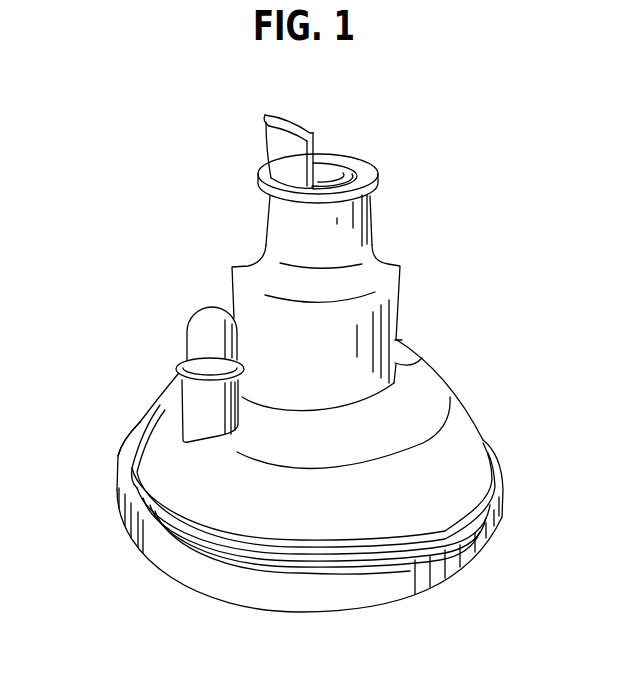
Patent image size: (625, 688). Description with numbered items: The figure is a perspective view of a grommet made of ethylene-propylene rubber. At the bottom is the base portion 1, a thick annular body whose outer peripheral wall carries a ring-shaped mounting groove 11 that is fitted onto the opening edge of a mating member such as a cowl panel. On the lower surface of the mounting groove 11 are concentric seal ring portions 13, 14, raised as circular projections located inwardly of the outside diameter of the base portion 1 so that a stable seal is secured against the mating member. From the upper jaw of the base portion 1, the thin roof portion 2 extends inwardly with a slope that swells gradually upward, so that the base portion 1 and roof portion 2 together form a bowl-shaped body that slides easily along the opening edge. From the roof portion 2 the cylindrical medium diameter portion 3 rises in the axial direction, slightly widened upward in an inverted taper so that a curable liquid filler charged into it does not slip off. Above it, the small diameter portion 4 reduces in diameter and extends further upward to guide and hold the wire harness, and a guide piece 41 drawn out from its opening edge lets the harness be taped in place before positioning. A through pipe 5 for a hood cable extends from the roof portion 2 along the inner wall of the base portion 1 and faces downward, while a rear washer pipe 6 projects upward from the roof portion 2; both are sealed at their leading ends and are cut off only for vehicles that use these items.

The base portion 1 is at (188, 578).
The roof portion 2 is at (437, 392).
The medium diameter portion 3 is at (387, 312).
The small diameter portion 4 is at (280, 226).
The through pipe 5 is at (407, 353).
The rear washer pipe 6 is at (197, 338).
The mounting groove 11 is at (476, 493).
The seal ring portion 13 is at (410, 540).
The seal ring portion 14 is at (130, 463).
The guide piece 41 is at (296, 127).